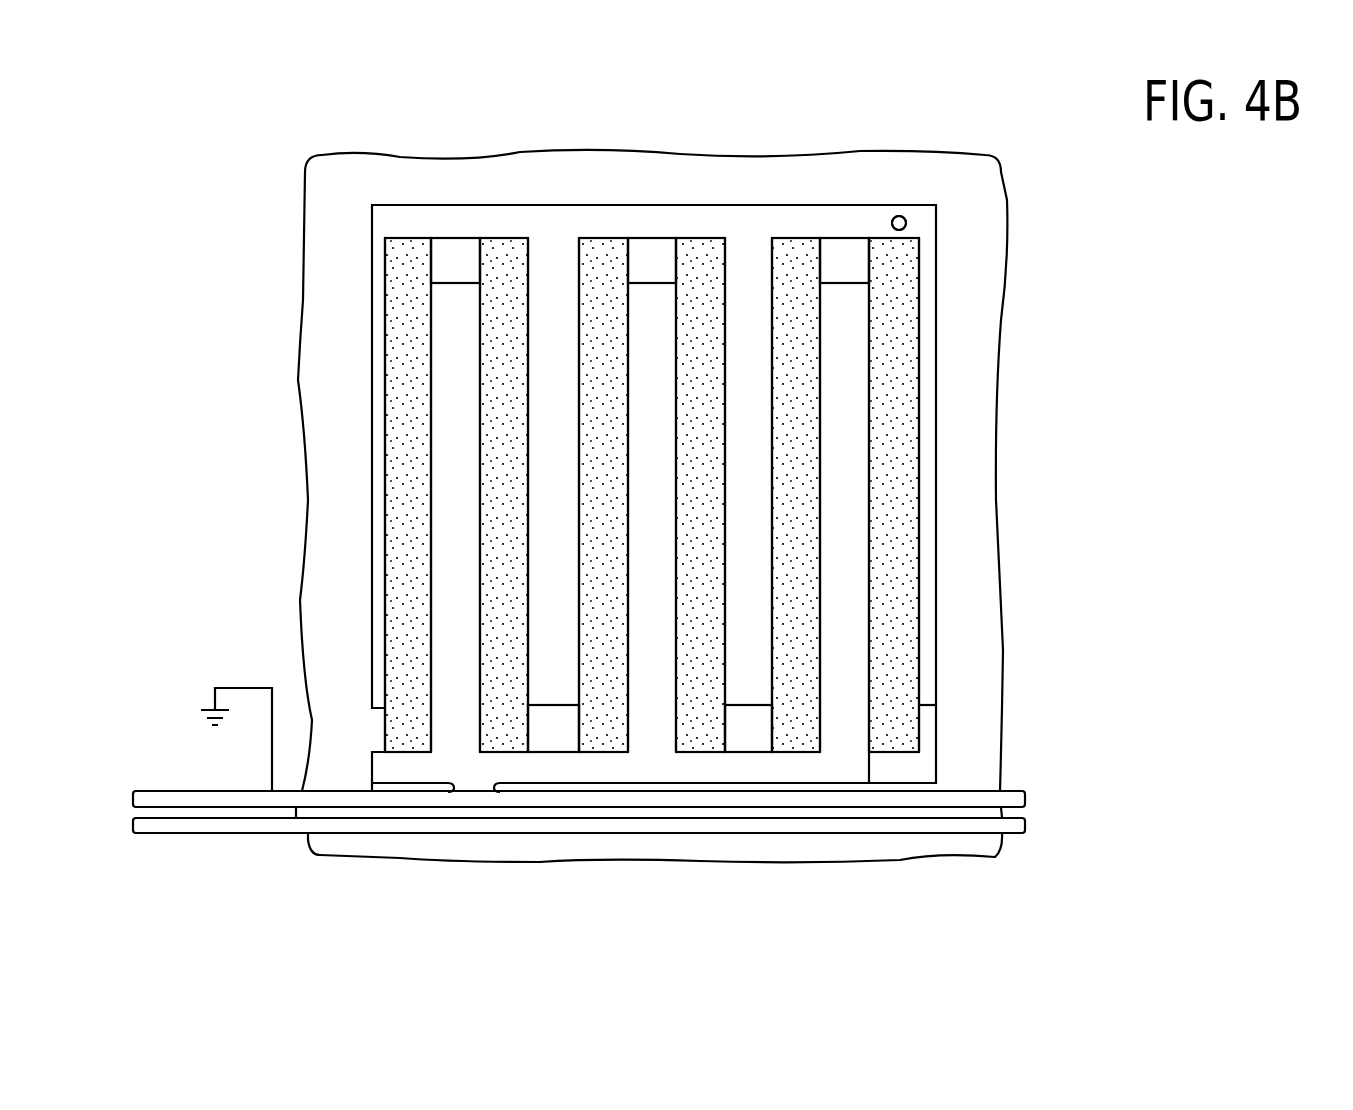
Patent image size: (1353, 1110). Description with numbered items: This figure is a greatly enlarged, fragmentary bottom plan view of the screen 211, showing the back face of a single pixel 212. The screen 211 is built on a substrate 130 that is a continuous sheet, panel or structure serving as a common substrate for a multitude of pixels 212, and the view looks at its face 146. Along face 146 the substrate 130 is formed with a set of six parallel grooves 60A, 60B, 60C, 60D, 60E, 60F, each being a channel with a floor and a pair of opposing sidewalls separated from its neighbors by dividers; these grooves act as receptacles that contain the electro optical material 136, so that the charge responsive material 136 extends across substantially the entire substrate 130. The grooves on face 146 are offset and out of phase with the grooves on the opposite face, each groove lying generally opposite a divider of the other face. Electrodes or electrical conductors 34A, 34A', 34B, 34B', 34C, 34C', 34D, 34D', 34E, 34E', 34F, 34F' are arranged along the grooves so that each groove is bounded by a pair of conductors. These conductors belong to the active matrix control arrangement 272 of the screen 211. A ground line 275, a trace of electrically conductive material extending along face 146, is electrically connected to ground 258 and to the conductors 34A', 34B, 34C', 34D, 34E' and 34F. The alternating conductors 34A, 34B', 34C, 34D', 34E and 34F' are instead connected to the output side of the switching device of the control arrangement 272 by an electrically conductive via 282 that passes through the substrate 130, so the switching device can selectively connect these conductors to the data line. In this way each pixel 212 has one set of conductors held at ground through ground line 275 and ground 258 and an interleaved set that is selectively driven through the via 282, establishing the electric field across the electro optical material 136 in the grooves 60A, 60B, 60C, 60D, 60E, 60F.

The screen 211 is at (307, 99).
The substrate 130 is at (840, 252).
The face 146 is at (390, 222).
The active matrix control arrangement 272 is at (923, 209).
The electrically conductive via 282 is at (905, 230).
The pixel 212 is at (1113, 248).
The groove 60A is at (897, 483).
The groove 60B is at (800, 518).
The groove 60C is at (707, 742).
The groove 60D is at (608, 742).
The groove 60E is at (510, 740).
The groove 60F is at (405, 421).
The electrical conductor 34A is at (1002, 495).
The electrical conductor 34A' is at (964, 495).
The electrical conductor 34B is at (843, 495).
The electrical conductor 34B' is at (748, 495).
The electrical conductor 34C is at (747, 495).
The electrical conductor 34C' is at (653, 495).
The electrical conductor 34D is at (651, 495).
The electrical conductor 34D' is at (554, 495).
The electrical conductor 34E is at (551, 495).
The electrical conductor 34E' is at (457, 495).
The electrical conductor 34F is at (375, 495).
The electrical conductor 34F' is at (316, 495).
The electro optical material 136 is at (800, 738).
The ground line 275 is at (212, 793).
The ground 258 is at (210, 706).